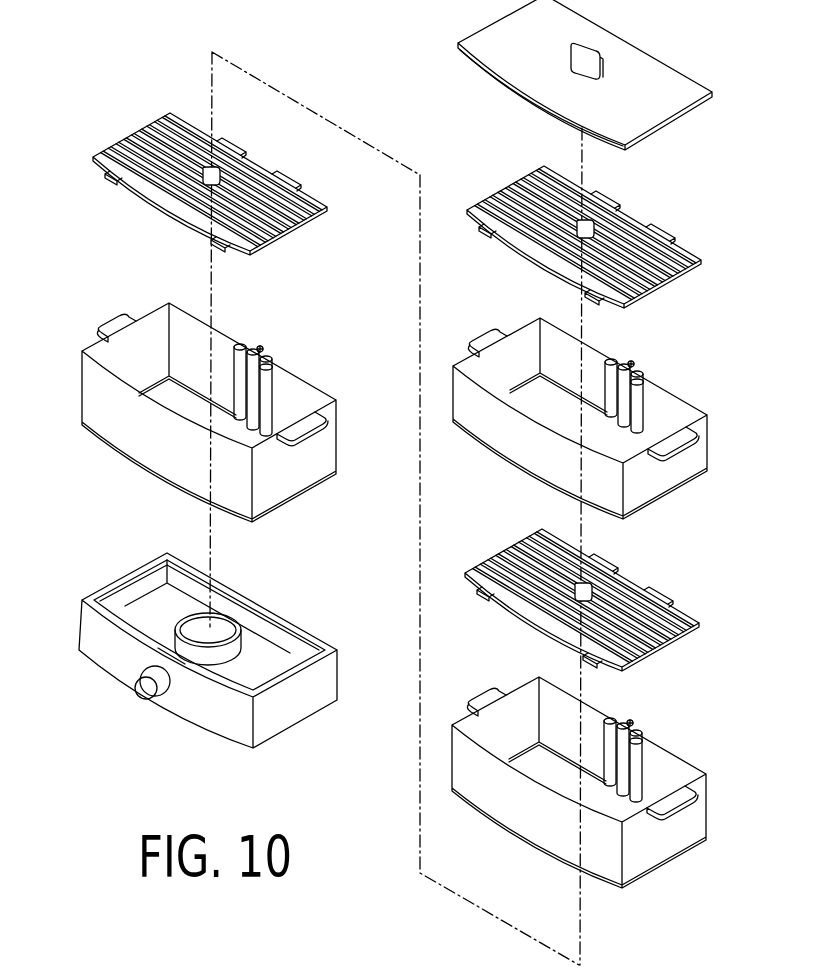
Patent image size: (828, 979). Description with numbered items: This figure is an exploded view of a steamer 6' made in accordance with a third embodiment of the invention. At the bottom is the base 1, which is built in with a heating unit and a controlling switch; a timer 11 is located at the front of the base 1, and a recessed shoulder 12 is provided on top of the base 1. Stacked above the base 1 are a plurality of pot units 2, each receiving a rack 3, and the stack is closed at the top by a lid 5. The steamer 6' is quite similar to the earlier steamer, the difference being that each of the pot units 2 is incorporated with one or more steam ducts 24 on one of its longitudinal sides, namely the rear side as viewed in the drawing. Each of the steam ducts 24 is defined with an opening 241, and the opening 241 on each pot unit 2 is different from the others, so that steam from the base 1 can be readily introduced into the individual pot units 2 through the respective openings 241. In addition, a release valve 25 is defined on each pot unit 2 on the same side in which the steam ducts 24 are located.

The base 1 is at (305, 703).
The pot unit 2 is at (323, 449).
The rack 3 is at (323, 193).
The lid 5 is at (667, 73).
The steamer 6' is at (396, 488).
The timer 11 is at (145, 690).
The recessed shoulder 12 is at (132, 577).
The steam duct 24 is at (267, 397).
The release valve 25 is at (260, 350).
The opening 241 is at (265, 370).